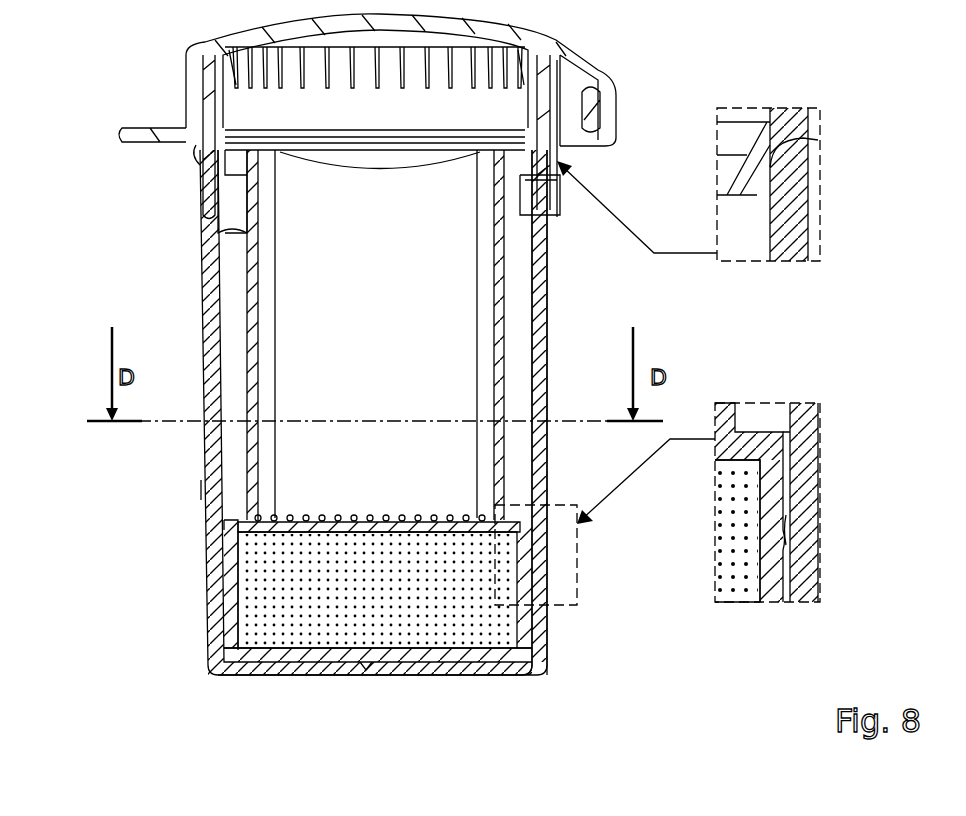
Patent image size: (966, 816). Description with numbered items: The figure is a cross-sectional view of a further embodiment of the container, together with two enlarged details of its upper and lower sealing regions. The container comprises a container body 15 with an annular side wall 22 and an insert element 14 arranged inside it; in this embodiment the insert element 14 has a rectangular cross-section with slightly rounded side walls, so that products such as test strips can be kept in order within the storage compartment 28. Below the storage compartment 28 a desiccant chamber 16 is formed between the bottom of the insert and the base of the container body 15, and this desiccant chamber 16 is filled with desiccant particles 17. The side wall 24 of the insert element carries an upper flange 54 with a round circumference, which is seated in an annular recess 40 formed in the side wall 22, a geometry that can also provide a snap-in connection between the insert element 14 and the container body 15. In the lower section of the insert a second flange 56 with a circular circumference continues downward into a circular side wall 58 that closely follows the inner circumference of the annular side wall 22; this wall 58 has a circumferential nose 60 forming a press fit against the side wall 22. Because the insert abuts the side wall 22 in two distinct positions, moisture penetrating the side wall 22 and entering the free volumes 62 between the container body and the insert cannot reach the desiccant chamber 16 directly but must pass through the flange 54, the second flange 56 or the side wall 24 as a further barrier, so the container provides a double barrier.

The insert element 14 is at (264, 339).
The container body 15 is at (194, 486).
The desiccant chamber 16 is at (260, 580).
The desiccant particles 17 is at (335, 602).
The annular side wall 22 is at (213, 292).
The side wall of the insert element 24 is at (250, 222).
The storage compartment 28 is at (412, 383).
The annular recess 40 is at (800, 140).
The upper flange 54 is at (235, 182).
The second flange 56 is at (238, 513).
The circular side wall 58 is at (243, 618).
The circumferential nose 60 is at (785, 515).
The free volumes 62 is at (236, 443).